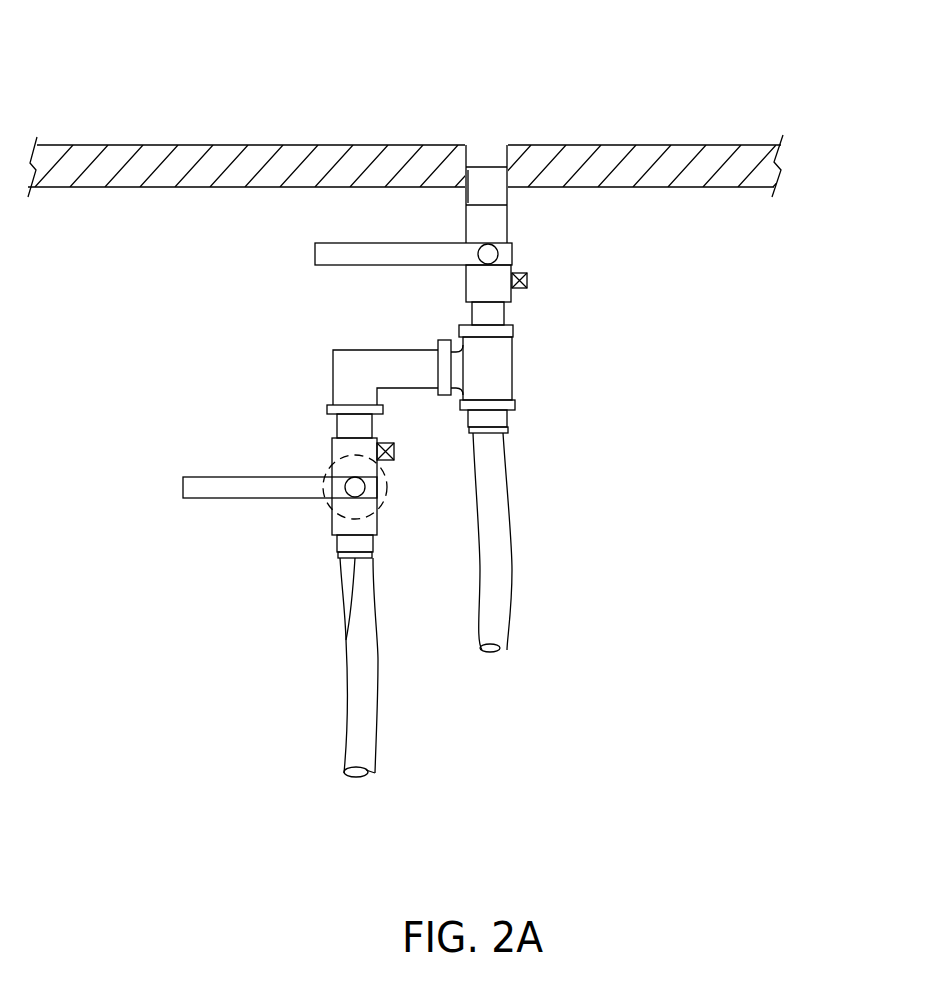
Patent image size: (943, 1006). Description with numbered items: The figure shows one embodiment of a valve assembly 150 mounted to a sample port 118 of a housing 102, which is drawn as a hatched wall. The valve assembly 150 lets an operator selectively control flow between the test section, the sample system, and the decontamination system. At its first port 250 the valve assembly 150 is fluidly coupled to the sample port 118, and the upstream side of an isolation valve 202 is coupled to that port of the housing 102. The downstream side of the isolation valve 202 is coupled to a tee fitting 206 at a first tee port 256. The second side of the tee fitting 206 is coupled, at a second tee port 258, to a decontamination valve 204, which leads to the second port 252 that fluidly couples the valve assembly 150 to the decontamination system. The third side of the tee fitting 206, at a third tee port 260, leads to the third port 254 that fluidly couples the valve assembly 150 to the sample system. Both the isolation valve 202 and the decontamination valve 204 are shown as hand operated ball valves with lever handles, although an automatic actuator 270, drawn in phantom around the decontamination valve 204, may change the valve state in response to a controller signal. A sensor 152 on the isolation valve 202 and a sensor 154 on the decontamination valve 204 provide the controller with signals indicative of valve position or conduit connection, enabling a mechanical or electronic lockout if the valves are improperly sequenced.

The housing 102 is at (315, 145).
The sample port 118 is at (497, 178).
The first port 250 is at (485, 176).
The isolation valve 202 is at (513, 252).
The sensor 152 is at (528, 281).
The first tee port 256 is at (518, 328).
The valve assembly 150 is at (548, 364).
The tee fitting 206 is at (505, 378).
The second tee port 258 is at (445, 340).
The sensor 154 is at (394, 450).
The decontamination valve 204 is at (343, 527).
The automatic actuator 270 is at (325, 440).
The second port 252 is at (348, 628).
The third port 254 is at (490, 433).
The third tee port 260 is at (512, 403).